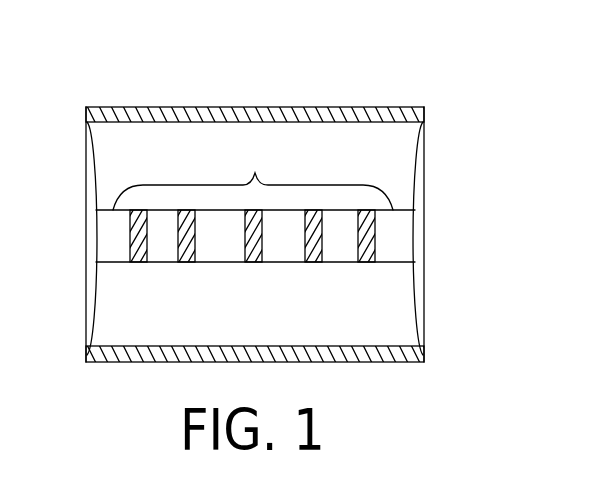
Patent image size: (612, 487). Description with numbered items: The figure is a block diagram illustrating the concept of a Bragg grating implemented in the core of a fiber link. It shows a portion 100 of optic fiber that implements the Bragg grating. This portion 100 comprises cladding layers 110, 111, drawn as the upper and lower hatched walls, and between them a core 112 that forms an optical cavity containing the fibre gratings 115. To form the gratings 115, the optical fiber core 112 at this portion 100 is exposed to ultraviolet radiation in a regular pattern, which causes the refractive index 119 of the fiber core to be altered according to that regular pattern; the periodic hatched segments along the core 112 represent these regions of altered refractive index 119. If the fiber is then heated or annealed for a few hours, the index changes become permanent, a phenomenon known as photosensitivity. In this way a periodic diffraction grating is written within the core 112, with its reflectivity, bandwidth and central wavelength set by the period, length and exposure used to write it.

The portion of optic fiber 100 is at (260, 81).
The cladding layer 110 is at (153, 113).
The cladding layer 111 is at (153, 353).
The core 112 is at (400, 212).
The fibre gratings 115 is at (253, 172).
The refractive index 119 is at (142, 267).